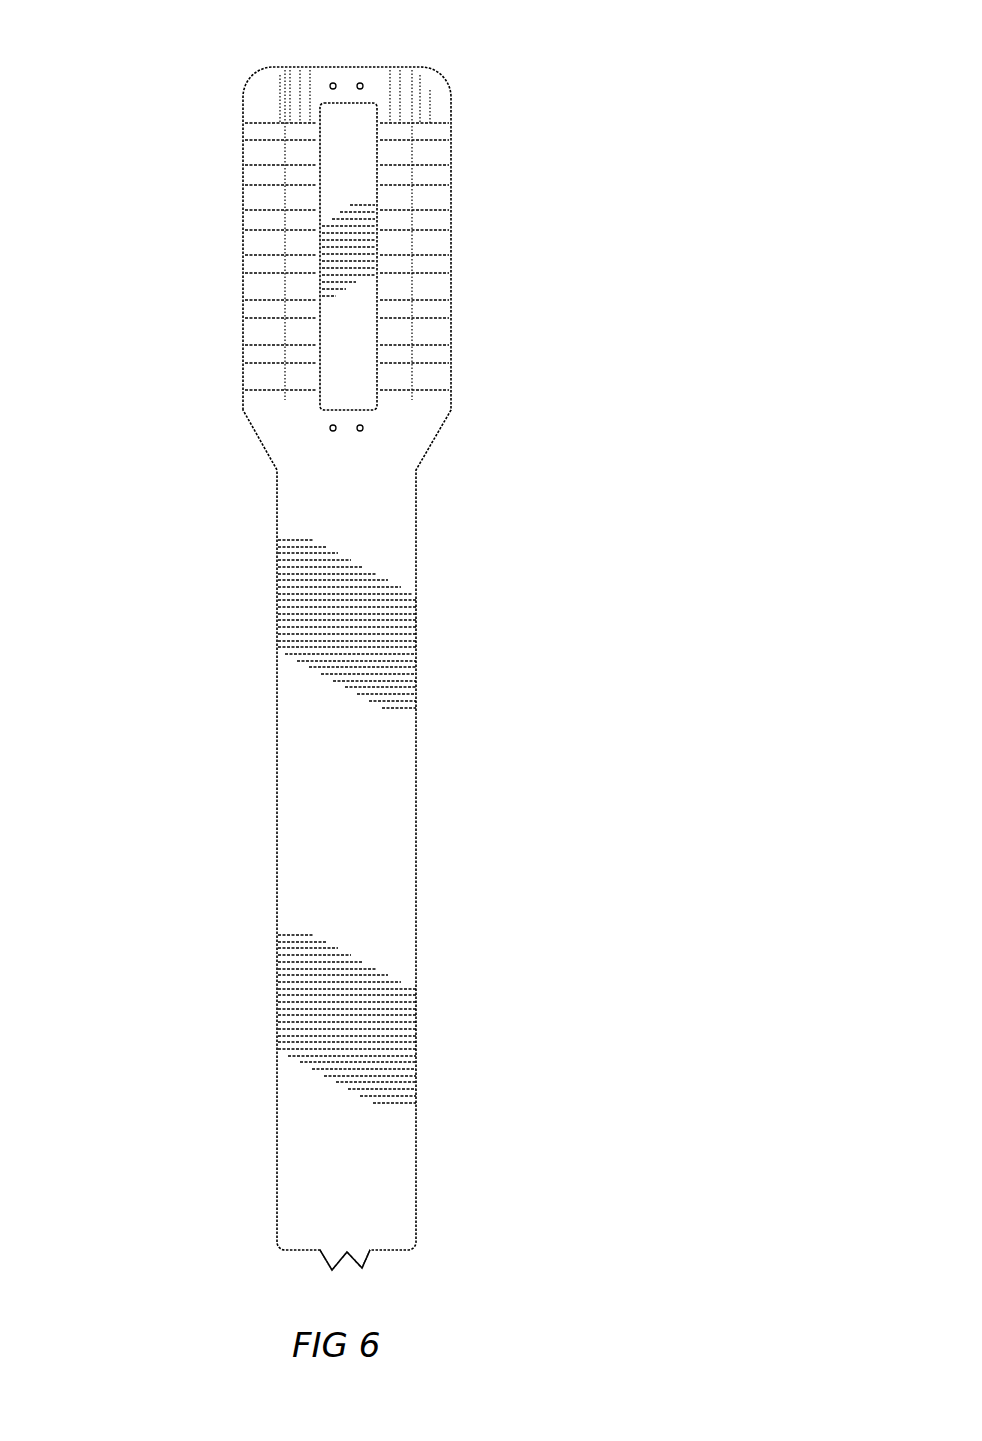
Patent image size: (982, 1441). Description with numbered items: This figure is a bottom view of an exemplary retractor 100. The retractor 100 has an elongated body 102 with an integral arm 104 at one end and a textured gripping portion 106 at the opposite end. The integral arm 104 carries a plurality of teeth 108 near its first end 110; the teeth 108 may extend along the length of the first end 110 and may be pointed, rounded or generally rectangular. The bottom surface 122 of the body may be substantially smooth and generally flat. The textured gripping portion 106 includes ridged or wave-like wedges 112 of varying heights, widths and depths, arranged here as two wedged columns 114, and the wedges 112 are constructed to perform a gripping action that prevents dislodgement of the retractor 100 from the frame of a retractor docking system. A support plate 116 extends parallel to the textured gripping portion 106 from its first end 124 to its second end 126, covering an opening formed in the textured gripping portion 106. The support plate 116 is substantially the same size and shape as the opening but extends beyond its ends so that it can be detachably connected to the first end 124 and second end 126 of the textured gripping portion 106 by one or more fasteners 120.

The retractor 100 is at (770, 66).
The elongated body 102 is at (220, 90).
The integral arm 104 is at (407, 882).
The textured gripping portion 106 is at (520, 70).
The teeth 108 is at (362, 1265).
The first end 110 is at (425, 1177).
The wedges 112 is at (443, 353).
The wedged columns 114 is at (272, 87).
The support plate 116 is at (368, 220).
The fasteners 120 is at (362, 427).
The bottom surface 122 is at (407, 788).
The first end 124 is at (343, 133).
The second end 126 is at (325, 388).